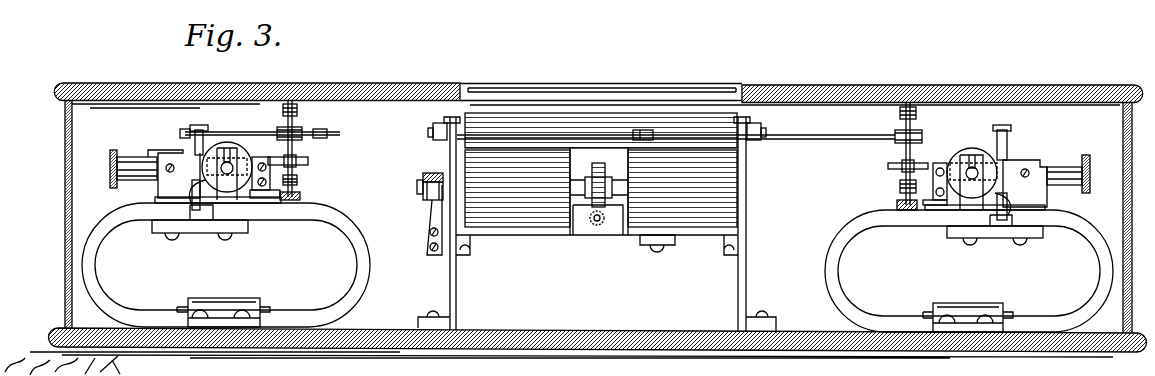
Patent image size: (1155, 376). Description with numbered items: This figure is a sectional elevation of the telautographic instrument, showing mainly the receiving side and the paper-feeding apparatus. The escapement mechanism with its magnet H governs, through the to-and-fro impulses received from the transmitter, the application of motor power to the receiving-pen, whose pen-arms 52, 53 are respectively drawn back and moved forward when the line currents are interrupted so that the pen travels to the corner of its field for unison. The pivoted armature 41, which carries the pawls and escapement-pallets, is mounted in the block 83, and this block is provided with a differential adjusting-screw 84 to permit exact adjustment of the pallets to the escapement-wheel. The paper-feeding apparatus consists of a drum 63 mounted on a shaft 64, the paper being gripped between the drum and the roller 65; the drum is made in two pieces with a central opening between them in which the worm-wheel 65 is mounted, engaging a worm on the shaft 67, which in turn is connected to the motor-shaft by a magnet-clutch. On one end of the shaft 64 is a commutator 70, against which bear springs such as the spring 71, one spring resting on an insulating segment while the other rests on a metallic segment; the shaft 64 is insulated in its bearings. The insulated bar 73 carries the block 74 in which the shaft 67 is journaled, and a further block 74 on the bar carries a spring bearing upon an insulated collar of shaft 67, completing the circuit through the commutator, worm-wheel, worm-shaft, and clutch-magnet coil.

The differential adjusting-screw 84 is at (139, 158).
The escapement-magnet H is at (597, 184).
The block 83 is at (193, 150).
The pen-arm 52 is at (259, 127).
The pivoted armature 41 is at (596, 155).
The pen-arm 53 is at (661, 130).
The drum 63 is at (601, 170).
The bar 73 is at (597, 225).
The block 74 is at (583, 228).
The roller 65 is at (599, 191).
The shaft 64 is at (619, 188).
The shaft 67 is at (598, 228).
The commutator 70 is at (434, 174).
The spring 71 is at (428, 222).